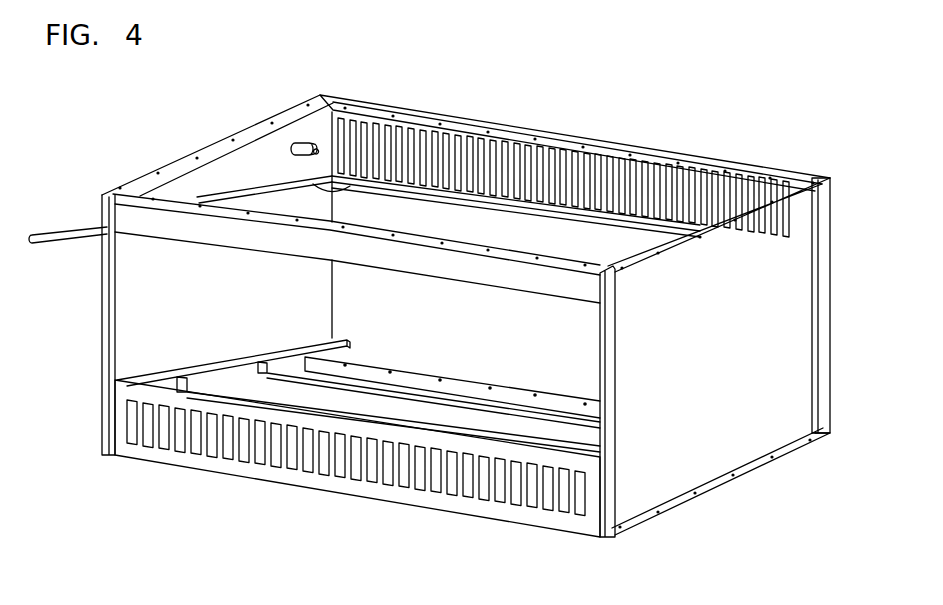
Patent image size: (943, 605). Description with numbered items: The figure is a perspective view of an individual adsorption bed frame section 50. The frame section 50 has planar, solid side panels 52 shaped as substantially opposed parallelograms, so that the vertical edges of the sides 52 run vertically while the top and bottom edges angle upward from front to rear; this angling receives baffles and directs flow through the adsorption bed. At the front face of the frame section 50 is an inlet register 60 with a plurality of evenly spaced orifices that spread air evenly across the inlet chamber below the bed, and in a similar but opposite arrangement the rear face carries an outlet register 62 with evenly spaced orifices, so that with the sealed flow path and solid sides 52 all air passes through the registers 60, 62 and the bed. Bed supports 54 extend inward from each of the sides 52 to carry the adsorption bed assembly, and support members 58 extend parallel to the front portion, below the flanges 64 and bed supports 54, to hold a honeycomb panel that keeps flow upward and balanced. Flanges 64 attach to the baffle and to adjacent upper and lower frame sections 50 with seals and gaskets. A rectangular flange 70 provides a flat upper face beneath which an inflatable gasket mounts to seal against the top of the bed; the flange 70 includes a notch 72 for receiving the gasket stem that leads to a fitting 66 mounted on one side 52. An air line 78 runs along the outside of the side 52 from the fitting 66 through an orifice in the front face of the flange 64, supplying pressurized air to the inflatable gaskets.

The frame section 50 is at (765, 107).
The side panel 52 is at (150, 322).
The bed support 54 is at (200, 362).
The support member 58 is at (377, 390).
The inlet register 60 is at (427, 473).
The outlet register 62 is at (600, 187).
The flange 64 is at (178, 162).
The fitting 66 is at (305, 143).
The flange 70 is at (265, 190).
The notch 72 is at (353, 183).
The air line 78 is at (72, 235).